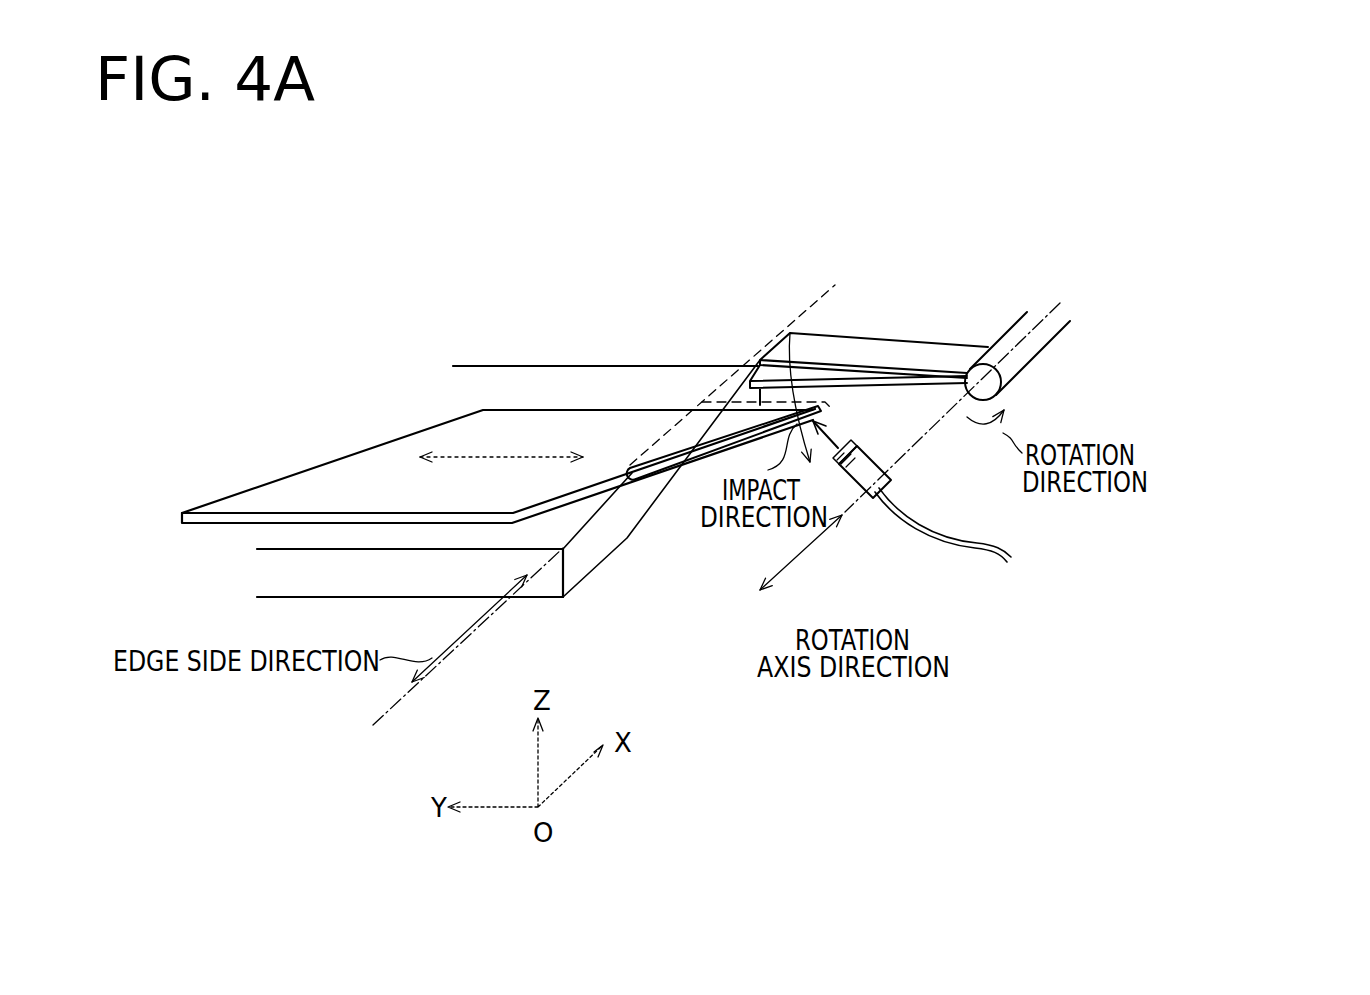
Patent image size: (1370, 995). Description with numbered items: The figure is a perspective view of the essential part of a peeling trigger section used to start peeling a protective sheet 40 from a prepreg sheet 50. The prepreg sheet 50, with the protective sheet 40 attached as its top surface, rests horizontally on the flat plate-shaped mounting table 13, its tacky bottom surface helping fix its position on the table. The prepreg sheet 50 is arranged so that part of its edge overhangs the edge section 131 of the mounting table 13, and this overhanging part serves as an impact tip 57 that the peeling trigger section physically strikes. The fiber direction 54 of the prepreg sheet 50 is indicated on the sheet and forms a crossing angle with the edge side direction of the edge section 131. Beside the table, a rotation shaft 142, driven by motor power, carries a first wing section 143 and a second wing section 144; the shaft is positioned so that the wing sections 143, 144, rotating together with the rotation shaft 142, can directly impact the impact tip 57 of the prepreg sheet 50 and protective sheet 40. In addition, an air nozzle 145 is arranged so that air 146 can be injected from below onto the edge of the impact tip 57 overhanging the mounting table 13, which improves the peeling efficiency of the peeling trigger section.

The mounting table 13 is at (621, 380).
The protective sheet 40 is at (342, 473).
The prepreg sheet 50 is at (215, 527).
The fiber direction 54 is at (478, 457).
The impact tip 57 is at (683, 463).
The edge section 131 is at (565, 552).
The rotation shaft 142 is at (1042, 350).
The first wing section 143 is at (870, 377).
The second wing section 144 is at (987, 345).
The air nozzle 145 is at (870, 498).
The air 146 is at (840, 446).